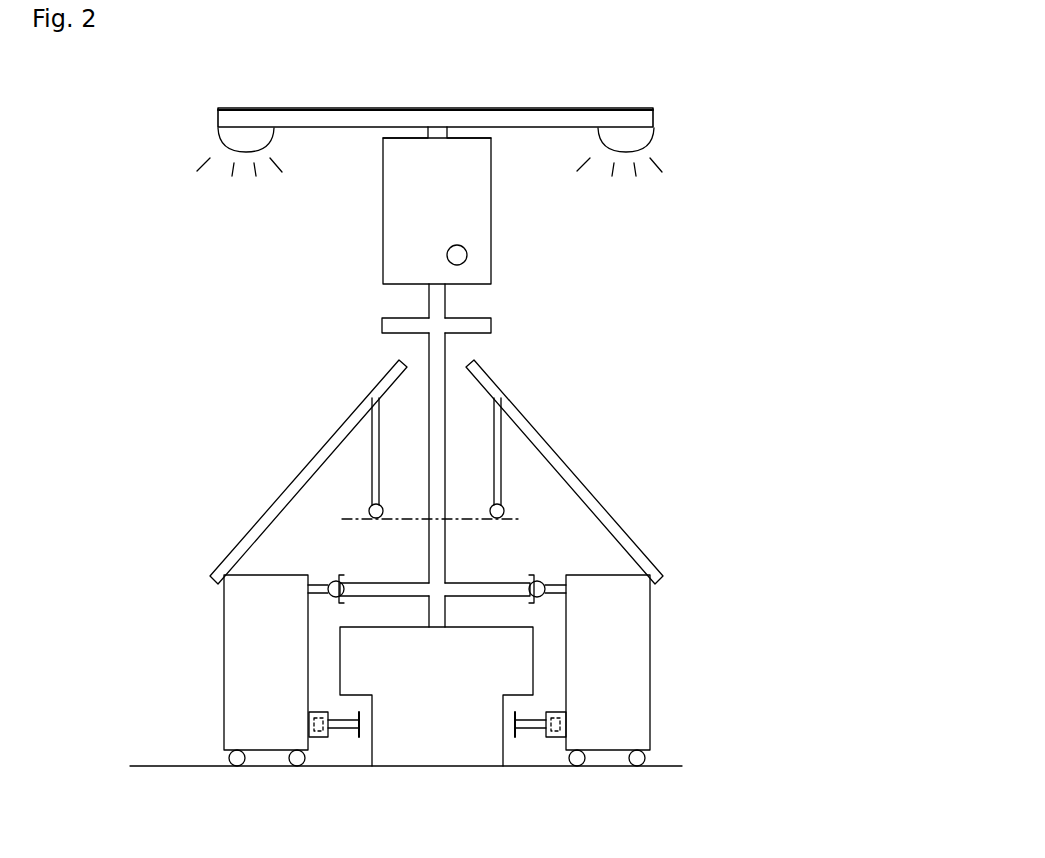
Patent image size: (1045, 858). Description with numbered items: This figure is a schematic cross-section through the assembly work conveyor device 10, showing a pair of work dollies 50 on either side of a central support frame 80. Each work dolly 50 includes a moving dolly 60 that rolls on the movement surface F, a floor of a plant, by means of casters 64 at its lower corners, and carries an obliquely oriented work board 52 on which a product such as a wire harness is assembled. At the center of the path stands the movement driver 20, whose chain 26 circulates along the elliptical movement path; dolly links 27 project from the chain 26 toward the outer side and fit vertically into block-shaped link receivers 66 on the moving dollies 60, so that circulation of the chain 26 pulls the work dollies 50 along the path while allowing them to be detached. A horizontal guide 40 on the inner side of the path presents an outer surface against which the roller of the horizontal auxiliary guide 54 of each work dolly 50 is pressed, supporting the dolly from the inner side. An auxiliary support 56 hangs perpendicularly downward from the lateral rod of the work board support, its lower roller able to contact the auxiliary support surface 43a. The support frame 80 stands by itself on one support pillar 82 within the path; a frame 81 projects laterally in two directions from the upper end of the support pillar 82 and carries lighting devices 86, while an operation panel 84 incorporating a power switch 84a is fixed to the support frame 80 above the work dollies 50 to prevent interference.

The assembly work conveyor device 10 is at (622, 365).
The movement driver 20 is at (513, 752).
The chain 26 is at (355, 742).
The dolly link 27 is at (340, 730).
The horizontal guide 40 is at (347, 578).
The auxiliary support surface 43a is at (520, 518).
The work dolly 50 is at (253, 487).
The work board 52 is at (326, 447).
The horizontal auxiliary guide 54 is at (336, 580).
The auxiliary support 56 is at (372, 474).
The moving dolly 60 is at (222, 658).
The caster 64 is at (282, 762).
The link receiver 66 is at (318, 712).
The support frame 80 is at (462, 308).
The frame 81 is at (345, 128).
The support pillar 82 is at (429, 476).
The operation panel 84 is at (491, 218).
The power switch 84a is at (467, 256).
The lighting device 86 is at (215, 129).
The movement surface F is at (682, 766).